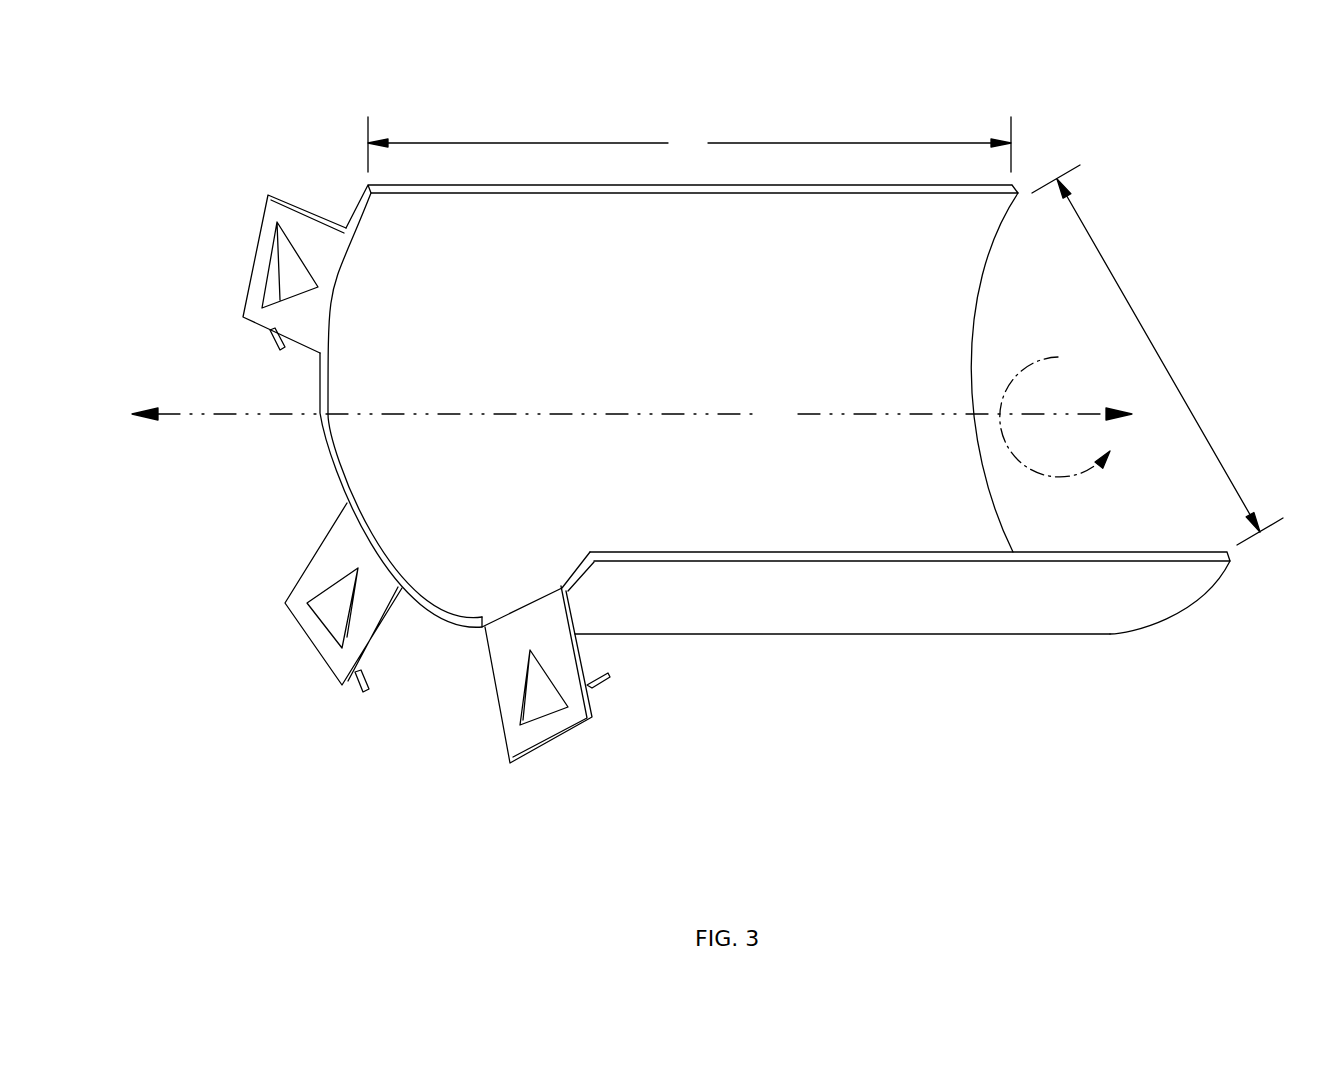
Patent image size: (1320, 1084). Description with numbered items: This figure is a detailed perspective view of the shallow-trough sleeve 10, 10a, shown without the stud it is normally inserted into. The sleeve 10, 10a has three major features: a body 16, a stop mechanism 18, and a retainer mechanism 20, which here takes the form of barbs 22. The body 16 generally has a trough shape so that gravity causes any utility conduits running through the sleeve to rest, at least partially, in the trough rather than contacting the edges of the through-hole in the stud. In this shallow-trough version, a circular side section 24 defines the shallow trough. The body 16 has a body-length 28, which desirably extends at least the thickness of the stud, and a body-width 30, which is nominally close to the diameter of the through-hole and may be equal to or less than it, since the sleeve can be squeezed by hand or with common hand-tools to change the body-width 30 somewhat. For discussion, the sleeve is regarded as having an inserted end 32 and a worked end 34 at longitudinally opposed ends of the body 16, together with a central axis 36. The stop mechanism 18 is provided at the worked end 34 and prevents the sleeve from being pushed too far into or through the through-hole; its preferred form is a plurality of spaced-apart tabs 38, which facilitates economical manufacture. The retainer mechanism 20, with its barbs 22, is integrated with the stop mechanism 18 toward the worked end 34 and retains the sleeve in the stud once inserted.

The sleeve 10 is at (1066, 106).
The shallow-trough sleeve 10a is at (704, 451).
The body 16 is at (842, 634).
The stop mechanism 18 is at (255, 260).
The retainer mechanism 20 is at (280, 352).
The barbs 22 is at (440, 510).
The circular side section 24 is at (524, 306).
The body-length 28 is at (689, 144).
The body-width 30 is at (1157, 355).
The inserted end 32 is at (985, 277).
The worked end 34 is at (327, 455).
The central axis 36 is at (632, 410).
The tabs 38 is at (415, 473).